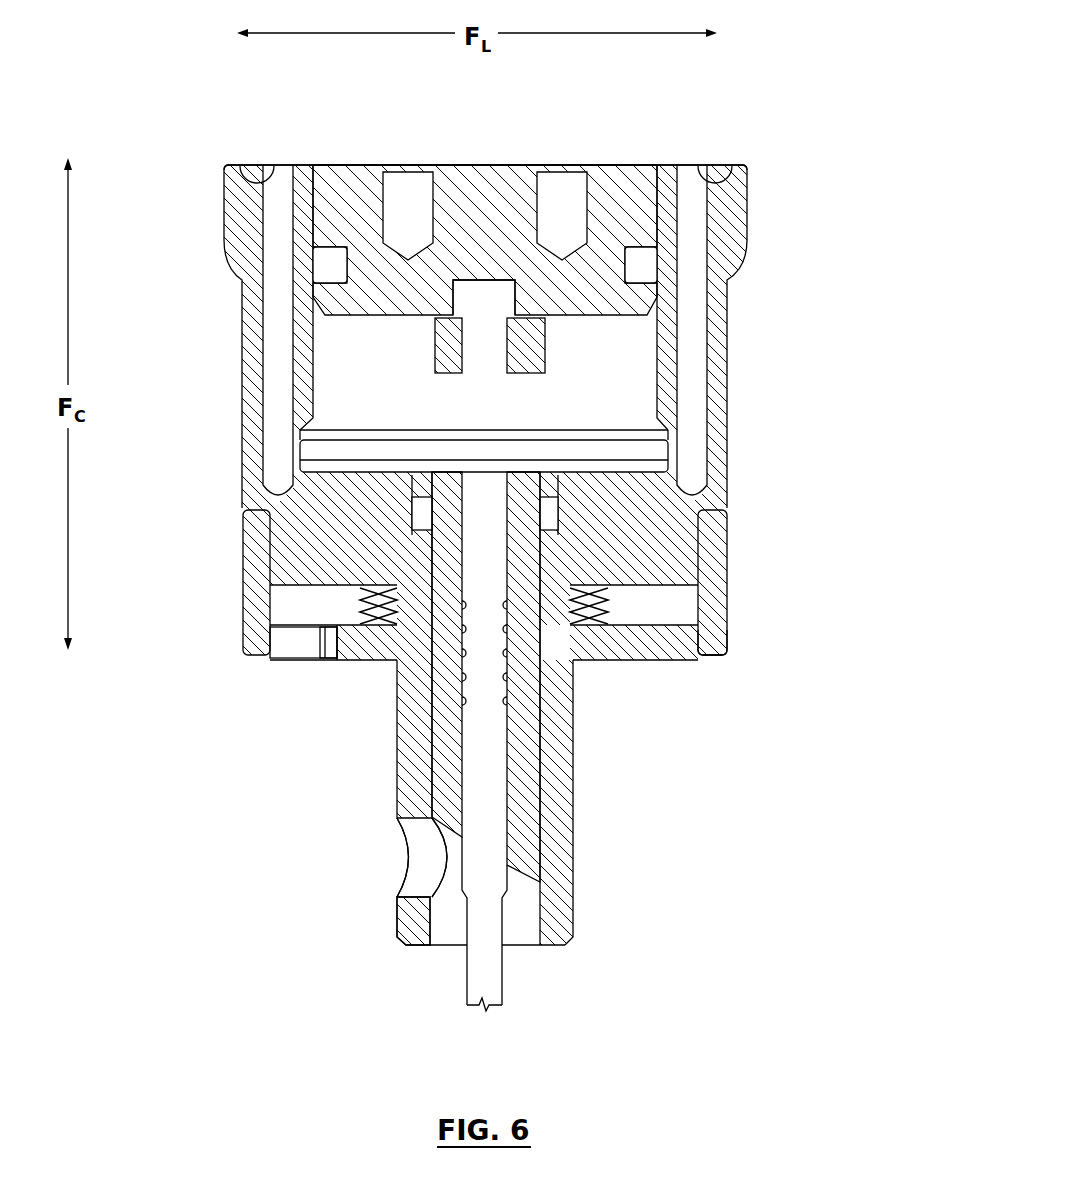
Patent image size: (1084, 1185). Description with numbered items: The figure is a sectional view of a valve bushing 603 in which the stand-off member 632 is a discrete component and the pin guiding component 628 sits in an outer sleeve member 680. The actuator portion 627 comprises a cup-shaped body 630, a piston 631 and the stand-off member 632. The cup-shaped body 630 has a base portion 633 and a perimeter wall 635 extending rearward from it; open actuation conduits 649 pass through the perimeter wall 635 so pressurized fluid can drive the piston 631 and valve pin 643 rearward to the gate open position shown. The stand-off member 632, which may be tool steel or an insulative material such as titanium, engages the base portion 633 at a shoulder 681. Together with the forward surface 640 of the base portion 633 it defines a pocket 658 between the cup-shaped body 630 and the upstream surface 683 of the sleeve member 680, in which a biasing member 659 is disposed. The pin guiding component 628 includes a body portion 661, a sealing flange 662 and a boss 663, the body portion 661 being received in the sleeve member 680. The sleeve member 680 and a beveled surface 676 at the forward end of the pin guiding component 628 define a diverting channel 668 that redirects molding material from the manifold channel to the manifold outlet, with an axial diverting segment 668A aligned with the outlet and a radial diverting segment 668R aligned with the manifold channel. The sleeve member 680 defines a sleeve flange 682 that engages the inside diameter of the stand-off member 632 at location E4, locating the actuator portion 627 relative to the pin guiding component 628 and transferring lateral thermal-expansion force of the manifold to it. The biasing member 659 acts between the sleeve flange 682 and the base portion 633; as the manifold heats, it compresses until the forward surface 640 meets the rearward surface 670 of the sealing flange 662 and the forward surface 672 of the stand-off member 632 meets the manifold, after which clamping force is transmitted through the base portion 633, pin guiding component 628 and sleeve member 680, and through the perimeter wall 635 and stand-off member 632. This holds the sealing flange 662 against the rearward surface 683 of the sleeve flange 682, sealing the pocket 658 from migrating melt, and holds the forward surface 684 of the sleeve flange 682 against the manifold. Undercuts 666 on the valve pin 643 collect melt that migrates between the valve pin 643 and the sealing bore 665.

The valve bushing 603 is at (866, 525).
The actuator portion 627 is at (116, 322).
The piston 631 is at (504, 186).
The perimeter wall 635 is at (243, 320).
The cup-shaped body 630 is at (243, 388).
The open actuation conduits 649 is at (690, 372).
The boss 663 is at (562, 505).
The sealing bore 665 is at (495, 548).
The rearward surface of sealing flange 670 is at (535, 585).
The forward surface of base portion 640 is at (727, 570).
The pocket 658 is at (673, 610).
The stand-off member 632 is at (712, 627).
The forward surface of stand-off member 672 is at (717, 662).
The shoulder 681 is at (270, 517).
The base portion 633 is at (300, 548).
The biasing member 659 is at (370, 600).
The sealing flange 662 is at (593, 620).
The location E4 is at (330, 649).
The upstream surface of sleeve member 683 is at (313, 660).
The forward surface of sleeve flange 684 is at (357, 660).
The sleeve flange 682 is at (363, 640).
The undercuts 666 is at (463, 673).
The diverting channel 668 is at (230, 850).
The radial diverting segment 668R is at (438, 875).
The axial diverting segment 668A is at (438, 922).
The valve pin 643 is at (483, 982).
The beveled surface 676 is at (528, 880).
The sleeve member 680 is at (560, 847).
The body portion 661 is at (560, 780).
The pin guiding component 628 is at (547, 689).